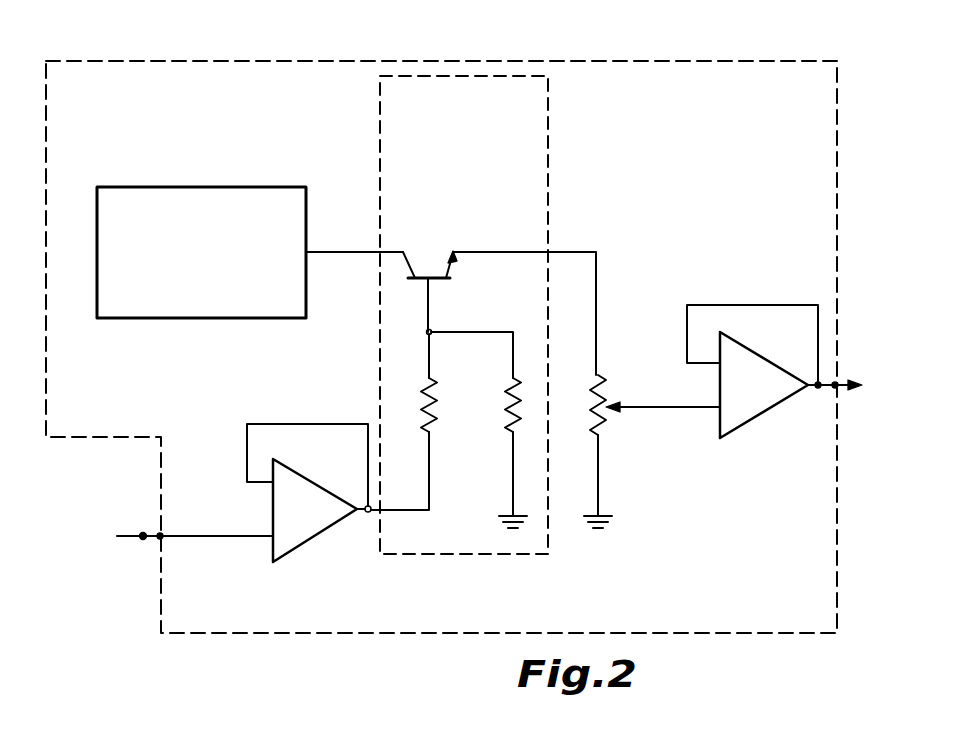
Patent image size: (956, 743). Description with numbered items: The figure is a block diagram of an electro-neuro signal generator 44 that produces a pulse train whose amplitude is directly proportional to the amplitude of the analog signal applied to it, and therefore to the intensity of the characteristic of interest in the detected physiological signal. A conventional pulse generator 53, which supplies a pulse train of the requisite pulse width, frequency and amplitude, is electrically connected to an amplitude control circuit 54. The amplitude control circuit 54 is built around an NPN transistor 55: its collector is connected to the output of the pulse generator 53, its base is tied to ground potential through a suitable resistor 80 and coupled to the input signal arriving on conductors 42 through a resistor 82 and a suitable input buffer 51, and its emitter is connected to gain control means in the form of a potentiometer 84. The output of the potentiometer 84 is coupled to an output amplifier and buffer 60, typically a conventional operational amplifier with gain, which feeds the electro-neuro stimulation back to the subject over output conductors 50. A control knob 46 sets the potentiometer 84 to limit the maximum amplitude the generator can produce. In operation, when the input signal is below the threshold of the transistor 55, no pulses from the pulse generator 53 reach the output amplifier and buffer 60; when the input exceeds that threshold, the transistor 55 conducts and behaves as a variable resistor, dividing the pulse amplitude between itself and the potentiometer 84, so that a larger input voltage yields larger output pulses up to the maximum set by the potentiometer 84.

The electro-neuro signal generator 44 is at (200, 61).
The pulse generator 53 is at (238, 187).
The amplitude control circuit 54 is at (548, 138).
The NPN transistor 55 is at (440, 280).
The resistor 82 is at (425, 405).
The resistor 80 is at (508, 405).
The potentiometer 84 is at (594, 400).
The control knob 46 is at (615, 404).
The output amplifier and buffer 60 is at (765, 359).
The output conductors 50 is at (835, 383).
The input buffer 51 is at (316, 485).
The conductors 42 is at (132, 538).